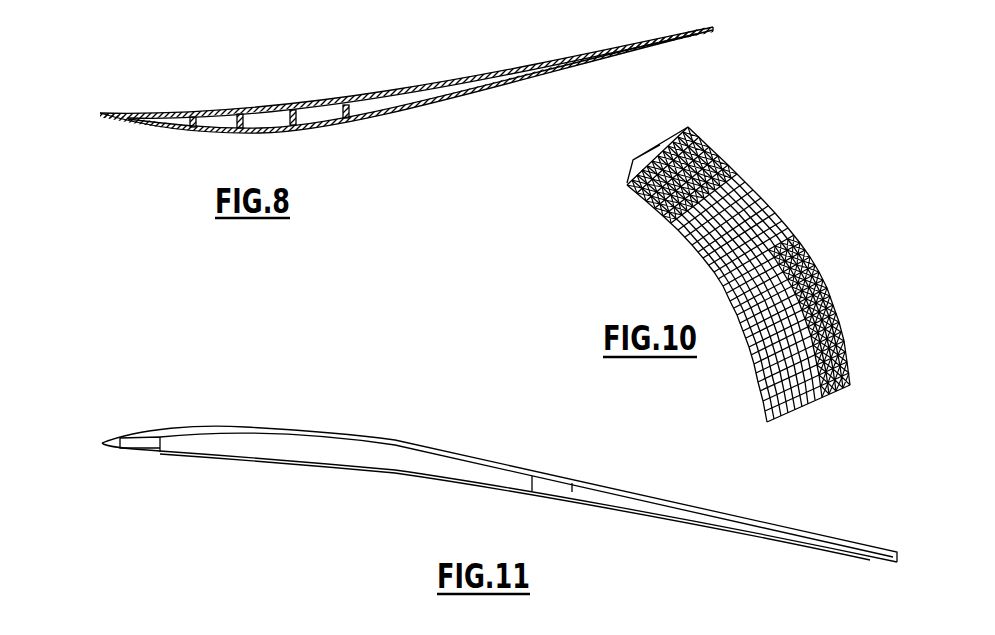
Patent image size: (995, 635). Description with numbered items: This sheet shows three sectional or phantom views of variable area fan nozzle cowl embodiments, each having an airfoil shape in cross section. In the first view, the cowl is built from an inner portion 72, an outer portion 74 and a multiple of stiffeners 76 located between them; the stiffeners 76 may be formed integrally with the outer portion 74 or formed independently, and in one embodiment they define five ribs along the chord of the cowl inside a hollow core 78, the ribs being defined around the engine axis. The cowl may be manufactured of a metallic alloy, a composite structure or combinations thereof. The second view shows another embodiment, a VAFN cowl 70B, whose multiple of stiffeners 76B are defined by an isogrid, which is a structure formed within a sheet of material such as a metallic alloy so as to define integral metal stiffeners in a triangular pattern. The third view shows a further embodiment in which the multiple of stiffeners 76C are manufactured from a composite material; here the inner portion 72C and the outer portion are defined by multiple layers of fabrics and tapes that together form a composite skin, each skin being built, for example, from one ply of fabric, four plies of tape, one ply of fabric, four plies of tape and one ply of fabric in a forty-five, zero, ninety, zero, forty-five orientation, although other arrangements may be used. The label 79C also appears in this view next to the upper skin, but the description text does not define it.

In FIG. 8, the inner portion 72 is at (427, 89).
In FIG. 8, the outer portion 74 is at (448, 96).
In FIG. 8, the stiffeners 76 is at (353, 112).
In FIG. 8, the hollow core 78 is at (308, 117).
In FIG. 10, the VAFN cowl 70B is at (824, 225).
In FIG. 10, the stiffeners 76B is at (828, 295).
In FIG. 11, the stiffeners 76C is at (145, 445).
In FIG. 11, the upper skin 79C is at (393, 440).
In FIG. 11, the inner portion 72C is at (623, 503).